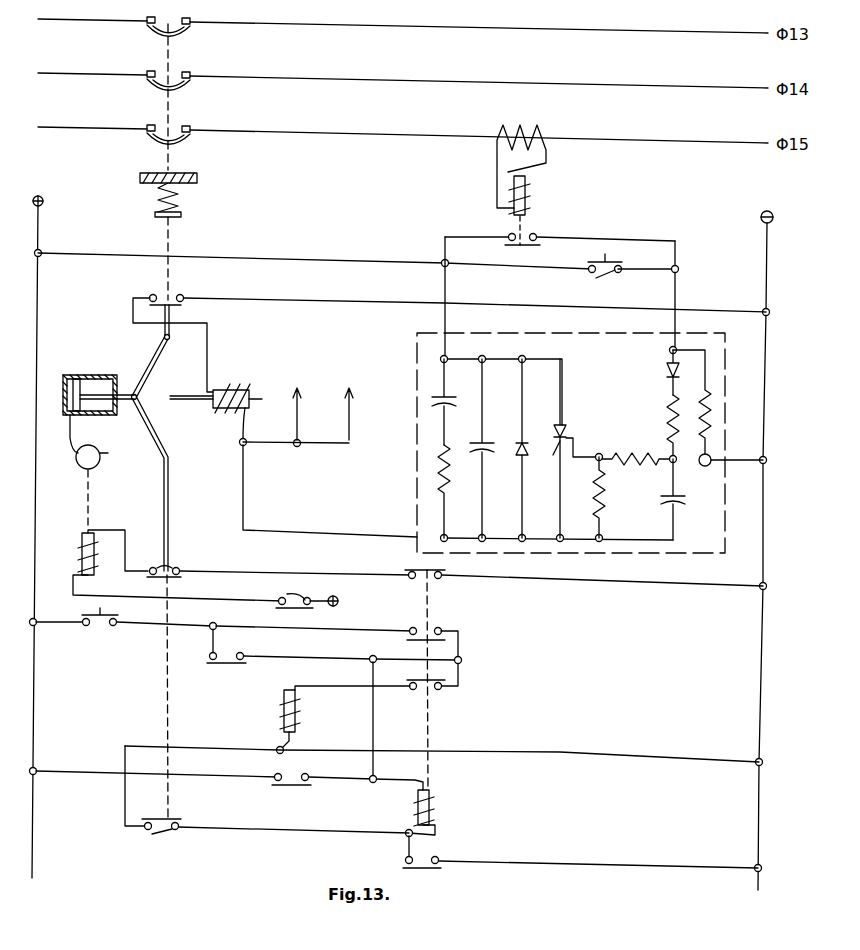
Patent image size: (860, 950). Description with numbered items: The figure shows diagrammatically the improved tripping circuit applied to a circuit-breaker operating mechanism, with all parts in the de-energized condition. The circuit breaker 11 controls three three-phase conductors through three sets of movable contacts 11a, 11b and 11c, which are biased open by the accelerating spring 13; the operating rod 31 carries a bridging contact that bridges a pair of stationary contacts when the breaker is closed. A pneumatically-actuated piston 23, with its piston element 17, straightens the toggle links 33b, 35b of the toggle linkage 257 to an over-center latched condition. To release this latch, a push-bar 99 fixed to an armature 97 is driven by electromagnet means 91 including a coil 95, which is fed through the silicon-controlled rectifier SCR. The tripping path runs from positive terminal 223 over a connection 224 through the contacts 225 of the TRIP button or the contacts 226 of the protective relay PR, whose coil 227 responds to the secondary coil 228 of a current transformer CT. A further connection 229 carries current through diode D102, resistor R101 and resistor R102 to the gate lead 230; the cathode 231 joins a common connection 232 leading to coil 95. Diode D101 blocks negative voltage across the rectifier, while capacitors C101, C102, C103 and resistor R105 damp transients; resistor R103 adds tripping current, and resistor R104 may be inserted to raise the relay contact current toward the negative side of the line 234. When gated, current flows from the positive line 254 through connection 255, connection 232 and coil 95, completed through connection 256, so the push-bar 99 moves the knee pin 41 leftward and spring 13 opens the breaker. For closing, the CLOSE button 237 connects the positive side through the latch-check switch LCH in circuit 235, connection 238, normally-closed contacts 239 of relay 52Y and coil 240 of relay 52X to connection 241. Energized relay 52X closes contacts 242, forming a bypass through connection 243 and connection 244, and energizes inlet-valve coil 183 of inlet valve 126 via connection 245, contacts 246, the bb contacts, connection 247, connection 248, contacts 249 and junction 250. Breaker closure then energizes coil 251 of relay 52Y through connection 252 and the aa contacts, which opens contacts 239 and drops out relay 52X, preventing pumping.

The movable contacts 11a is at (150, 36).
The movable contacts 11b is at (150, 90).
The movable contacts 11c is at (150, 144).
The circuit breaker 11 is at (192, 97).
The accelerating spring 13 is at (180, 189).
The operating rod 31 is at (171, 236).
The positive terminal 223 is at (43, 198).
The connection 224 is at (332, 260).
The contacts of trip button 225 is at (592, 276).
The contacts of protective relay 226 is at (505, 237).
The coil of protective relay 227 is at (528, 206).
The secondary coil of current transformer 228 is at (521, 125).
The connection 229 is at (677, 300).
The gate lead 230 is at (570, 440).
The cathode 231 is at (523, 458).
The common connection 232 is at (348, 532).
The negative side of the line 234 is at (762, 214).
The circuit 235 is at (156, 624).
The CLOSE button 237 is at (86, 620).
The connection 238 is at (461, 672).
The normally-closed contacts of relay 52Y 239 is at (411, 690).
The coil of relay 52X 240 is at (298, 710).
The connection 241 is at (557, 758).
The contacts of relay 52X 242 is at (275, 774).
The connection 243 is at (89, 773).
The connection 244 is at (371, 717).
The connection 245 is at (611, 588).
The normally-closed contacts of relay 52Y 246 is at (412, 580).
The connection 247 is at (128, 547).
The connection 248 is at (232, 601).
The contacts of relay 52X 249 is at (285, 598).
The conductor junction 250 is at (240, 629).
The coil of relay 52Y 251 is at (410, 795).
The connection 252 is at (275, 830).
The positive line 254 is at (447, 283).
The connection 255 is at (560, 520).
The connection 256 is at (328, 306).
The toggle linkage 257 is at (175, 416).
The pneumatically-actuated piston 23 is at (92, 375).
The piston 17 is at (104, 375).
The knee pin 41 is at (139, 397).
The toggle link 35b is at (158, 352).
The toggle link 33b is at (158, 442).
The push-bar 99 is at (190, 396).
The electromagnet means 91 is at (231, 390).
The coil 95 is at (232, 415).
The armature 97 is at (268, 399).
The inlet valve 126 is at (96, 466).
The inlet-valve coil 183 is at (82, 547).
The bb contacts bb is at (157, 568).
The aa contacts aa is at (150, 831).
The current transformer CT is at (506, 166).
The protective relay PR is at (533, 195).
The TRIP button TRIP is at (639, 252).
The CLOSE button CLOSE is at (99, 642).
The latch-check switch LCH is at (221, 670).
The relay 52X is at (266, 720).
The relay 52Y is at (441, 812).
The silicon-controlled rectifier SCR is at (576, 448).
The diode D101 is at (520, 443).
The diode D102 is at (668, 368).
The resistor R101 is at (668, 402).
The resistor R102 is at (656, 464).
The resistor R103 is at (605, 518).
The resistor R104 is at (710, 413).
The resistor R105 is at (440, 481).
The capacitor C101 is at (690, 507).
The capacitor C102 is at (430, 402).
The capacitor C103 is at (502, 462).